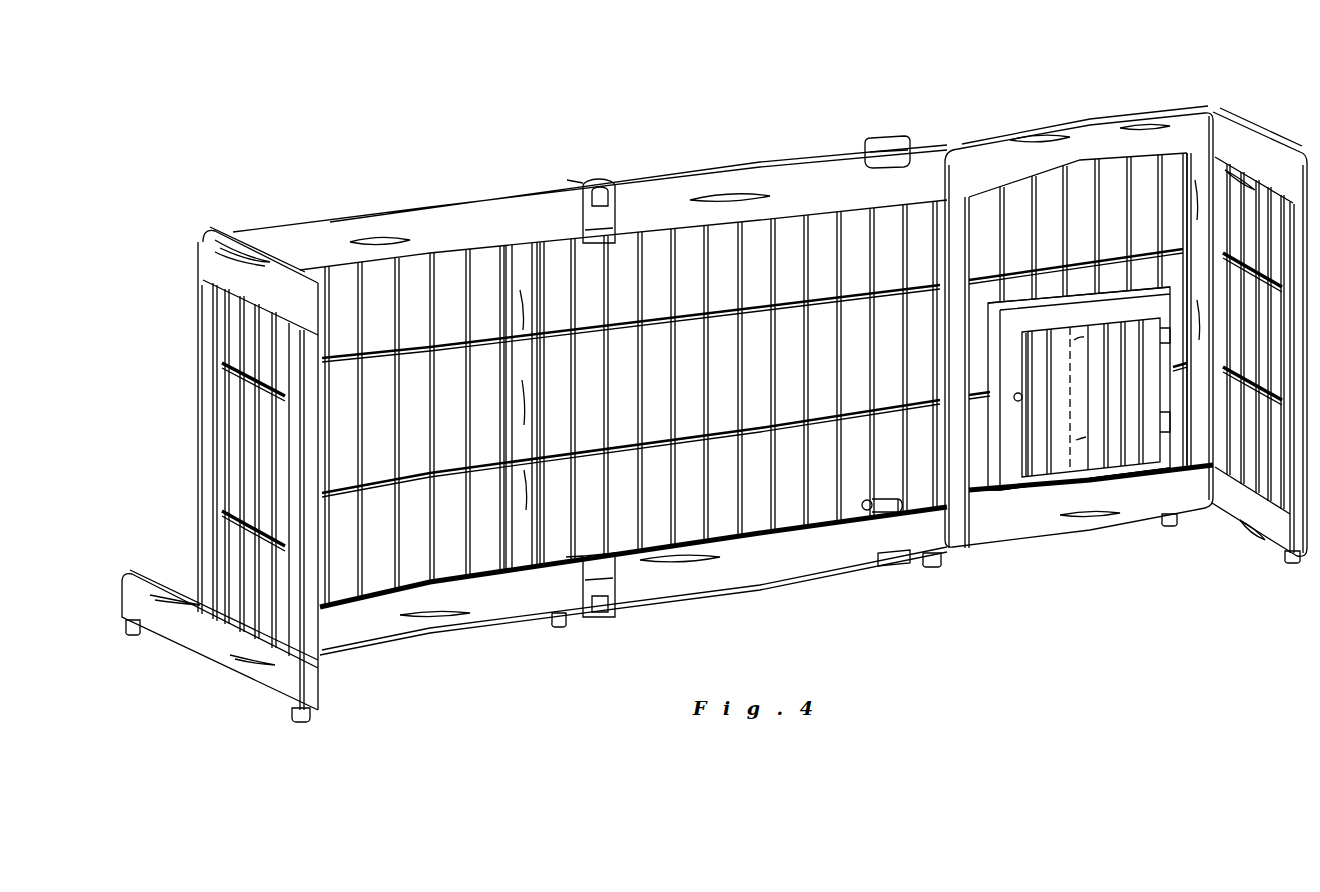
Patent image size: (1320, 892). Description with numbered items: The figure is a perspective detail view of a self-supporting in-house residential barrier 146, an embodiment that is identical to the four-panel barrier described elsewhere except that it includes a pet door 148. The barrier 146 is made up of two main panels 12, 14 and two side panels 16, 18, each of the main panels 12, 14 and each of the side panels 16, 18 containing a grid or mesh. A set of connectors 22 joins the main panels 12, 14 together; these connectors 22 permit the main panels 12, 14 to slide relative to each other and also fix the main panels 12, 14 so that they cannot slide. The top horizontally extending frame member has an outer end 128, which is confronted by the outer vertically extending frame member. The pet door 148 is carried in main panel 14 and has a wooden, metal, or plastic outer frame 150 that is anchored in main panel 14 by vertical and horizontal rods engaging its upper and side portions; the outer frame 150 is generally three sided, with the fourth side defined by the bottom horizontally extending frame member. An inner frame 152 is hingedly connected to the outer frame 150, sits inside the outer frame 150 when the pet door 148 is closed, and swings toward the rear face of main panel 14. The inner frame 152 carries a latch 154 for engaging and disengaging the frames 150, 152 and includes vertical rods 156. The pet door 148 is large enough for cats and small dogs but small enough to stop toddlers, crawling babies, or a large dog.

The main panel 12 is at (317, 207).
The main panel 14 is at (1090, 337).
The side panel 16 is at (240, 683).
The side panel 18 is at (1260, 122).
The connector 22 is at (883, 135).
The outer end 128 is at (1197, 503).
The barrier 146 is at (1084, 337).
The pet door 148 is at (1047, 484).
The outer frame 150 is at (1113, 290).
The inner frame 152 is at (1052, 308).
The latch 154 is at (1018, 404).
The vertical rods 156 is at (1050, 420).